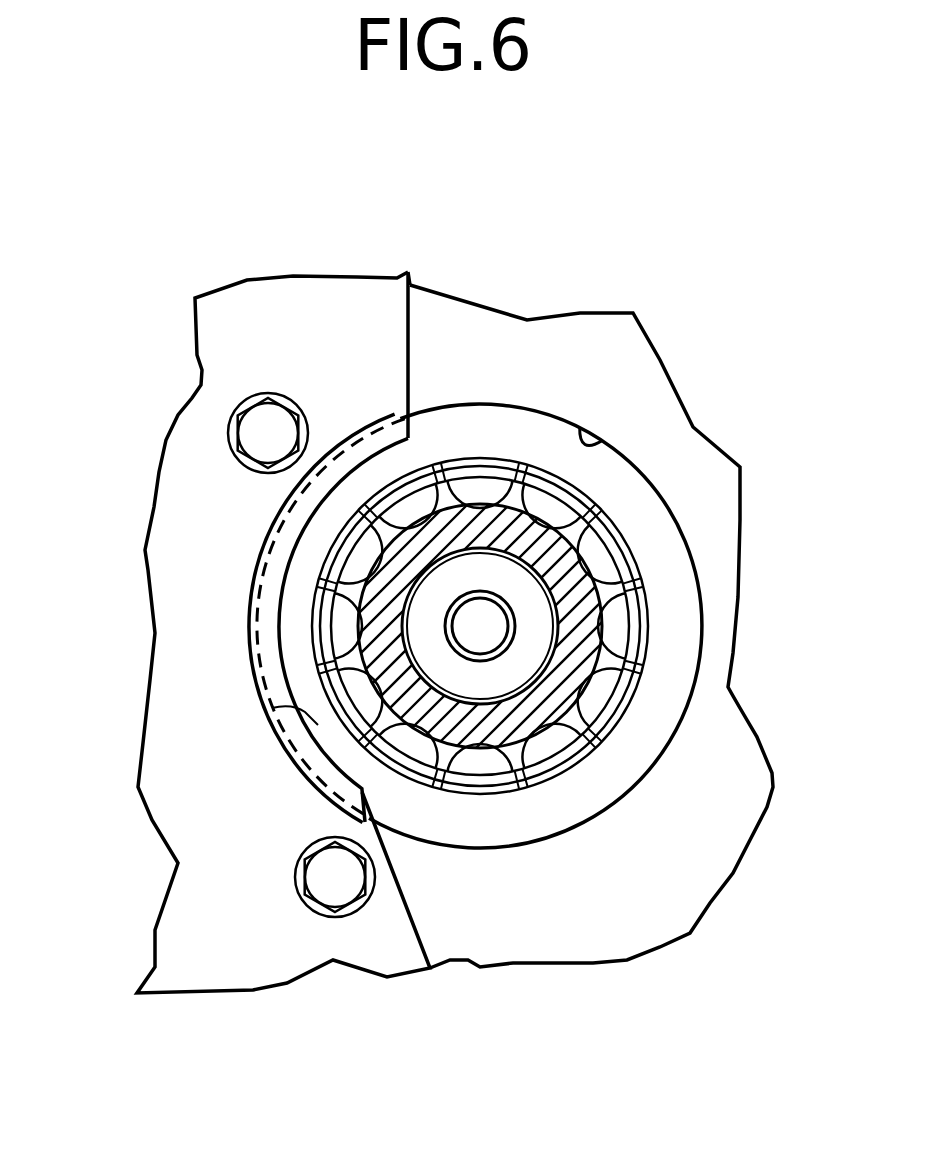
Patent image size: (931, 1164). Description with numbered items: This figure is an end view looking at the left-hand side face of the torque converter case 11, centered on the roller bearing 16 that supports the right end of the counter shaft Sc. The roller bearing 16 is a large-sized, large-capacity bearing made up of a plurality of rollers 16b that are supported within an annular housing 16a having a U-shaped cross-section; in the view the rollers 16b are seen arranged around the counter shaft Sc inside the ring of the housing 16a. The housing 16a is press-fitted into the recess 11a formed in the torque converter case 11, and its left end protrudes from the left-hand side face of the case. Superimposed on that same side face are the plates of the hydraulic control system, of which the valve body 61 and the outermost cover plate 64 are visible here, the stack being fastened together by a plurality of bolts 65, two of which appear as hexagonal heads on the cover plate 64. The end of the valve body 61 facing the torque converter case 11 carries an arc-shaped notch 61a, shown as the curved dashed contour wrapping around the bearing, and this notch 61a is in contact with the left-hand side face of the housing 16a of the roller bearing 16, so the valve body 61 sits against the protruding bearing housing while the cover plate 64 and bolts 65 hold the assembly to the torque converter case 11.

The torque converter case 11 is at (540, 302).
The recess 11a is at (573, 427).
The roller bearing 16 is at (586, 826).
The housing 16a is at (640, 743).
The rollers 16b is at (509, 483).
The valve body 61 is at (286, 631).
The arc-shaped notch 61a is at (280, 750).
The cover plate 64 is at (337, 285).
The bolts 65 is at (268, 429).
The counter shaft Sc is at (593, 627).